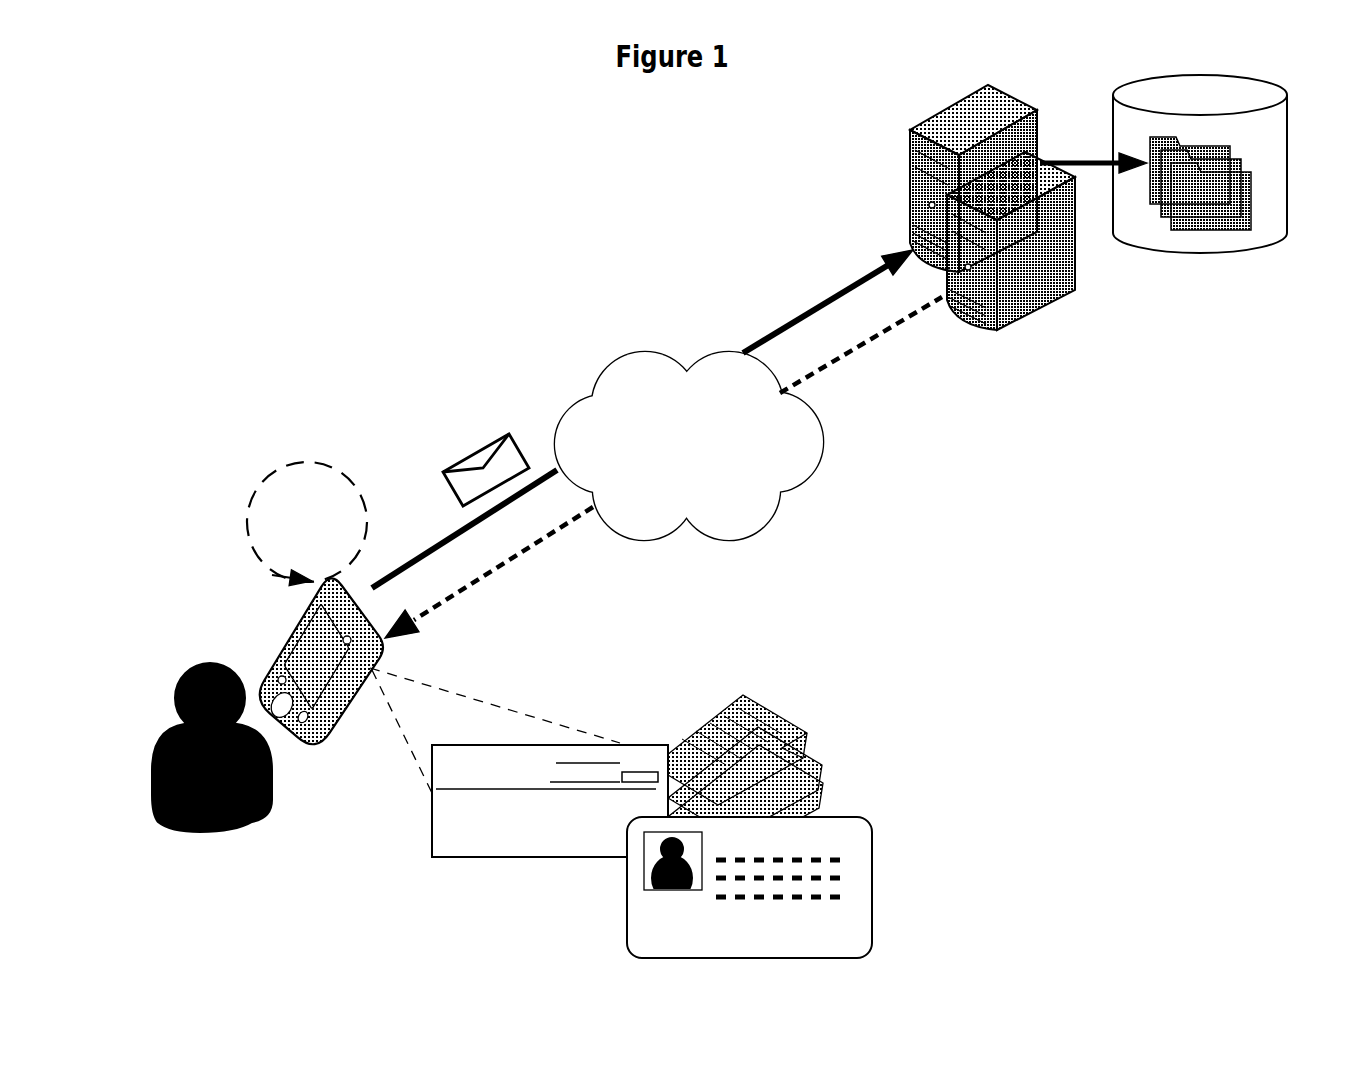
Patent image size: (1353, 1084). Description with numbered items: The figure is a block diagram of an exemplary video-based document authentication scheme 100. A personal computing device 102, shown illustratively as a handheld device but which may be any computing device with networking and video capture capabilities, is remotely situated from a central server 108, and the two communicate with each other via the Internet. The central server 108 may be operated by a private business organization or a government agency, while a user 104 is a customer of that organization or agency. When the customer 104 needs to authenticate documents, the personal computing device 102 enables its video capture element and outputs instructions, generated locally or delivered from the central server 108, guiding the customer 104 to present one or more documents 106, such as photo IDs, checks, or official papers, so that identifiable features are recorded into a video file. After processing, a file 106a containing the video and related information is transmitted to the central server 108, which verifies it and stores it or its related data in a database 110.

The system 100 is at (1047, 613).
The personal computing device 102 is at (239, 645).
The user 104 is at (117, 727).
The documents 106 is at (832, 769).
The file 106a is at (475, 451).
The central server 108 is at (1009, 386).
The database 110 is at (1200, 101).